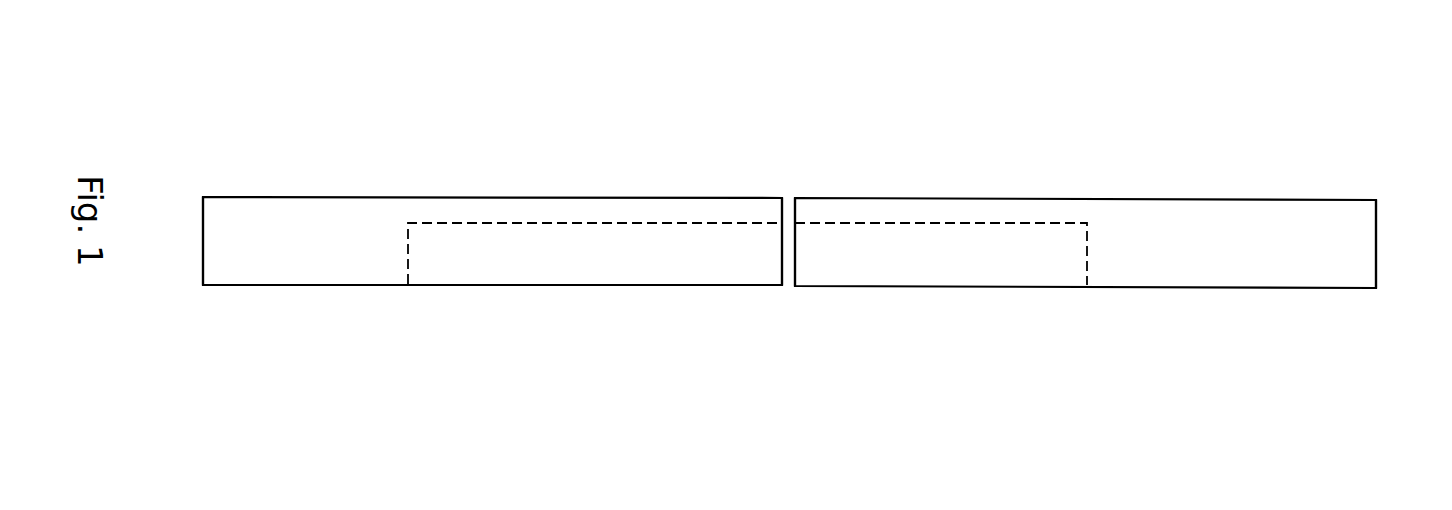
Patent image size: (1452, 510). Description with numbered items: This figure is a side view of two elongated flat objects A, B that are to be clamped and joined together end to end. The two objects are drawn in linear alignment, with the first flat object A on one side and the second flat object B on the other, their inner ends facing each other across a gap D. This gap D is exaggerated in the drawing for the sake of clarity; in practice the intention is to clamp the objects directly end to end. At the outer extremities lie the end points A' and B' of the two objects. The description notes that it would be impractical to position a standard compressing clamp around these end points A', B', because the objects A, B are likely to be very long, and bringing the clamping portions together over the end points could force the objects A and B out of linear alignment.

The flat object A is at (492, 184).
The end point of object A A' is at (170, 184).
The flat object B is at (1085, 186).
The end point of object B B' is at (1405, 186).
The gap D is at (788, 283).